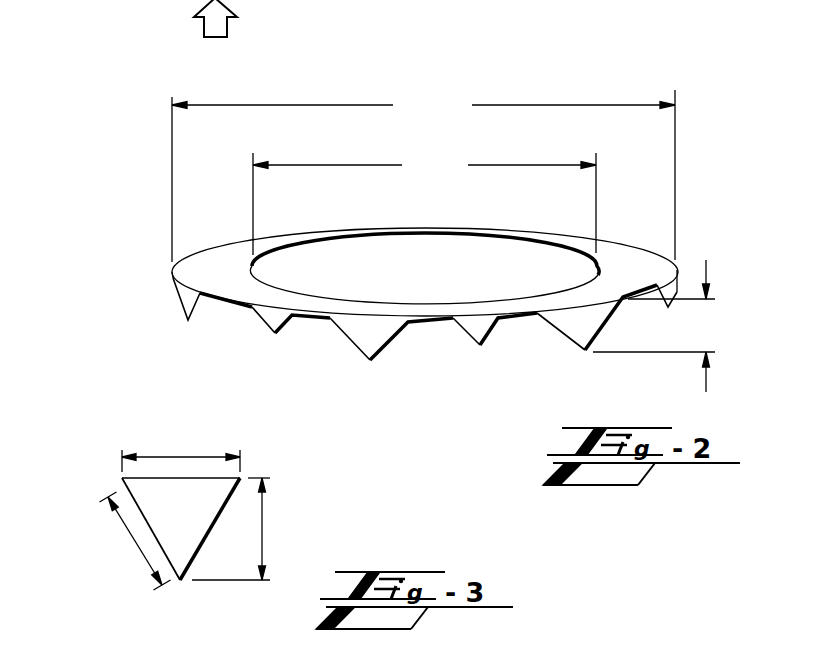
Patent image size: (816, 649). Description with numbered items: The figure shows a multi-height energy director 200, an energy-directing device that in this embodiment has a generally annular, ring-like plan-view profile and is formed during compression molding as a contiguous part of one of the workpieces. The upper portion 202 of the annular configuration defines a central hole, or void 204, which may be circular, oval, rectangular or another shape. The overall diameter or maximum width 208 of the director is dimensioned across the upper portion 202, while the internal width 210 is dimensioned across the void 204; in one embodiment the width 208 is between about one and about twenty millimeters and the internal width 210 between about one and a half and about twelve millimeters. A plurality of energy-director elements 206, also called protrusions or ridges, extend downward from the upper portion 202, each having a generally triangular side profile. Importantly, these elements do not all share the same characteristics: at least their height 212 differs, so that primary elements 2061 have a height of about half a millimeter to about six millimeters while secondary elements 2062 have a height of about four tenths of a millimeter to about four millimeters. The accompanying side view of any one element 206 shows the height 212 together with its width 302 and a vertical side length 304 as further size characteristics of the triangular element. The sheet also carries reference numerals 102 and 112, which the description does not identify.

In FIG. 2, the substrate 102 is at (172, 0).
In FIG. 2, the direction arrow 112 is at (230, 20).
In FIG. 2, the energy director 200 is at (572, 50).
In FIG. 2, the upper portion 202 is at (212, 250).
In FIG. 2, the void 204 is at (541, 290).
In FIG. 2, the energy-director element 206 is at (425, 375).
In FIG. 3, the energy-director element 206 is at (72, 508).
In FIG. 2, the primary element 2061 is at (376, 354).
In FIG. 2, the secondary element 2062 is at (489, 334).
In FIG. 2, the width 208 is at (423, 176).
In FIG. 2, the internal width 210 is at (424, 203).
In FIG. 2, the height 212 is at (660, 326).
In FIG. 3, the height 212 is at (263, 529).
In FIG. 3, the width 302 is at (175, 457).
In FIG. 3, the vertical side length 304 is at (127, 533).